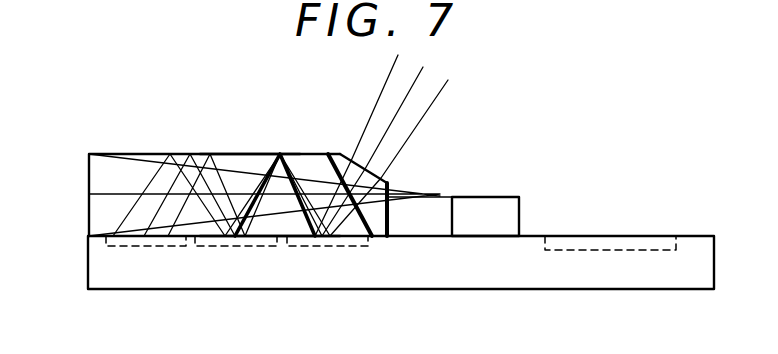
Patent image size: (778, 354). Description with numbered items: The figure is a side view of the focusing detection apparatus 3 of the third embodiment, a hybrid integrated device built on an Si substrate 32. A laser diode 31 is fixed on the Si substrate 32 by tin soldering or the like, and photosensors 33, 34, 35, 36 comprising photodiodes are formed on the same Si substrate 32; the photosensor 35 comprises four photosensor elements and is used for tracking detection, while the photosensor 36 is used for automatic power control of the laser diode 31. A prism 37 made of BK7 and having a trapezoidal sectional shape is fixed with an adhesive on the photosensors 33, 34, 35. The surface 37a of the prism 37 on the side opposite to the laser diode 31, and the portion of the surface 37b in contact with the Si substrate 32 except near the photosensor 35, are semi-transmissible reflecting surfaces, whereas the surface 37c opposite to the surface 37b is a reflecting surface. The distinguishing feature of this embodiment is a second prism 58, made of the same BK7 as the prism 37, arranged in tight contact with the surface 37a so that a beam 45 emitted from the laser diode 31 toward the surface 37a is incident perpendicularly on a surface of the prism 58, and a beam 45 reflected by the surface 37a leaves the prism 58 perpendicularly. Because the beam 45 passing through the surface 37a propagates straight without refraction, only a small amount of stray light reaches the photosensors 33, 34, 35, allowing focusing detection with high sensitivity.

The focusing detection apparatus 3 is at (174, 102).
The laser diode 31 is at (497, 208).
The Si substrate 32 is at (487, 270).
The photosensor 33 is at (327, 242).
The photosensor 34 is at (232, 242).
The photosensor 35 is at (140, 242).
The photosensor 36 is at (616, 243).
The prism 37 is at (100, 181).
The surface of the prism 37a is at (366, 236).
The surface of the prism 37b is at (264, 236).
The surface of the prism 37c is at (238, 153).
The beam 45 is at (427, 237).
The prism 58 is at (342, 153).